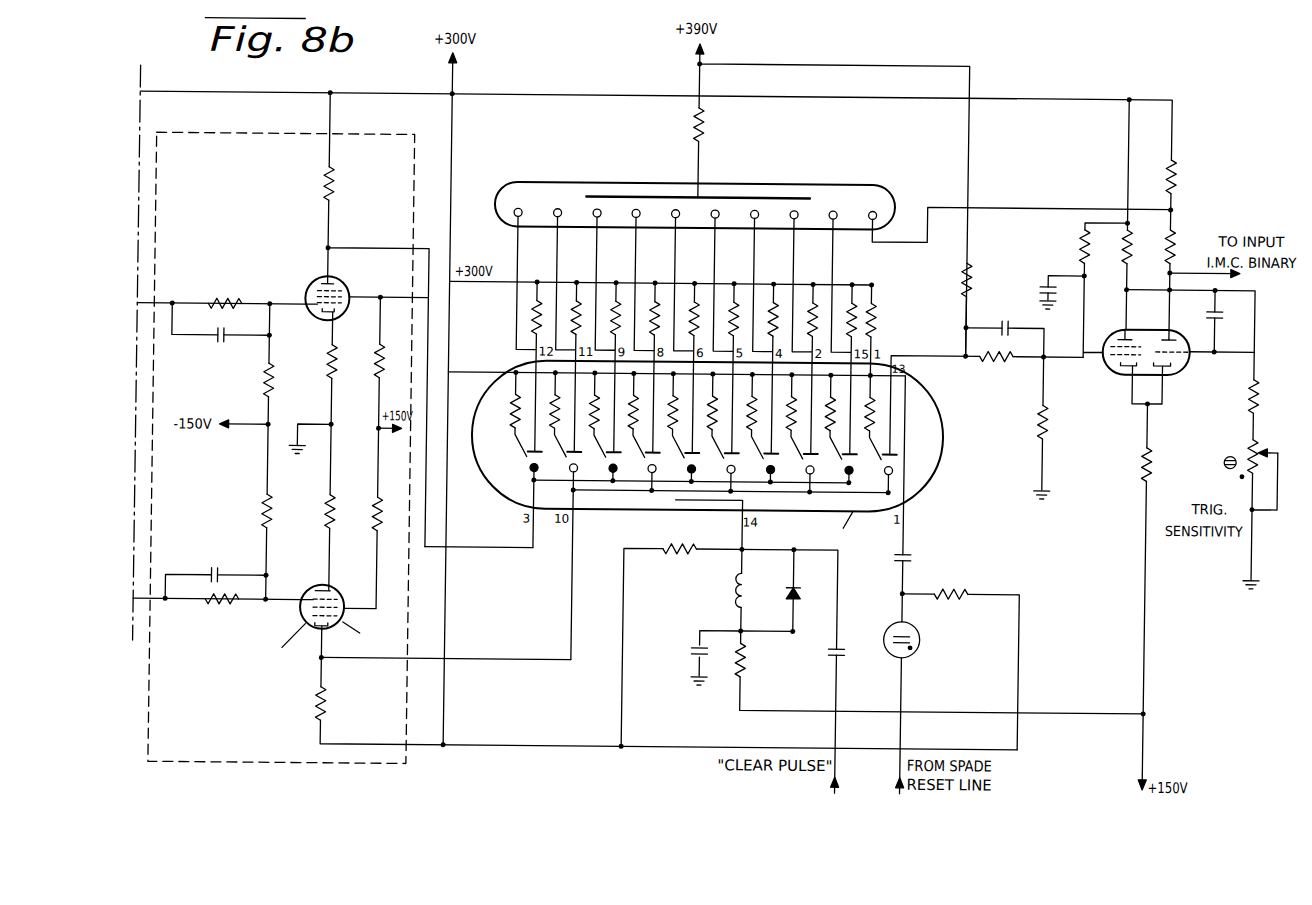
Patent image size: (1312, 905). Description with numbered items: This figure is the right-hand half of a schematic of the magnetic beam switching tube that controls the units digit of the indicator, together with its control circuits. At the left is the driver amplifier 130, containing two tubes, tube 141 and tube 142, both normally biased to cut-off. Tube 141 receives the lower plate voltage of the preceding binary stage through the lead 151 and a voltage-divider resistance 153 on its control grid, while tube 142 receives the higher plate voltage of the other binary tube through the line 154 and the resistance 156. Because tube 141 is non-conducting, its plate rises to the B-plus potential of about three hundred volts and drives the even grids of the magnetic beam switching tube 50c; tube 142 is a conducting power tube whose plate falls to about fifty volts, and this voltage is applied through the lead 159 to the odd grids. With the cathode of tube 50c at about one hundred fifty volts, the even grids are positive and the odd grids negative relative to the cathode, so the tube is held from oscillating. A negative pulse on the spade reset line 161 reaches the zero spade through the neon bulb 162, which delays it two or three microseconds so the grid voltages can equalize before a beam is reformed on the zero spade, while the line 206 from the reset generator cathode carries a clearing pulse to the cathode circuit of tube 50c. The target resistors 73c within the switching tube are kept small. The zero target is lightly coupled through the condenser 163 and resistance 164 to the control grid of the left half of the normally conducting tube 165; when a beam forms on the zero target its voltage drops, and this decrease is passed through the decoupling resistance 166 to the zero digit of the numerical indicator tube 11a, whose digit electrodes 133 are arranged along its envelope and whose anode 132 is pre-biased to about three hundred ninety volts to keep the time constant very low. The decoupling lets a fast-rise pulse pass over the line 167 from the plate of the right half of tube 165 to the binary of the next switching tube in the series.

The driver amplifier 130 is at (382, 137).
The counting tube 11a is at (520, 182).
The anode 132 is at (757, 196).
The guide cathodes of counting tube 133 is at (835, 209).
The tube 142 is at (311, 280).
The tube 141 is at (314, 592).
The line 154 is at (147, 306).
The resistance 156 is at (215, 304).
The lead 151 is at (144, 602).
The resistance 153 is at (231, 607).
The cathode resistor of MBS tube 73c is at (516, 412).
The magnetic beam switching tube 50c is at (632, 513).
The lead 159 is at (457, 549).
The line 206 is at (842, 675).
The neon bulb 162 is at (916, 648).
The spade reset line 161 is at (906, 721).
The condenser 163 is at (1002, 318).
The resistance 164 is at (993, 365).
The tube 165 is at (1110, 368).
The decoupling resistance 166 is at (1170, 246).
The line 167 is at (1206, 273).